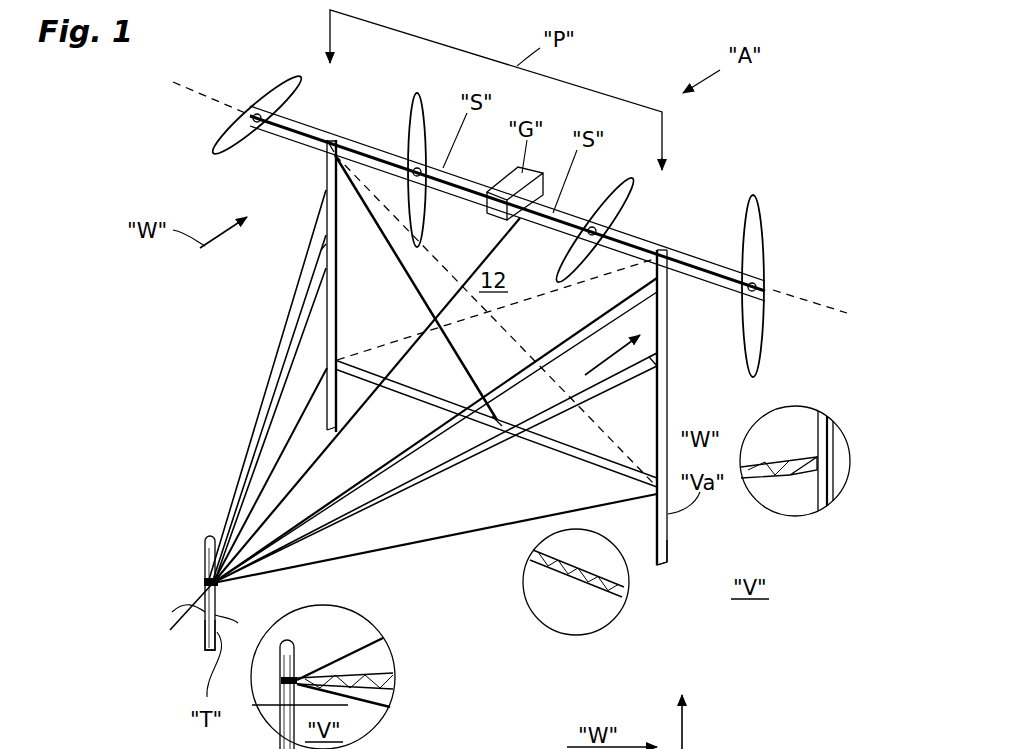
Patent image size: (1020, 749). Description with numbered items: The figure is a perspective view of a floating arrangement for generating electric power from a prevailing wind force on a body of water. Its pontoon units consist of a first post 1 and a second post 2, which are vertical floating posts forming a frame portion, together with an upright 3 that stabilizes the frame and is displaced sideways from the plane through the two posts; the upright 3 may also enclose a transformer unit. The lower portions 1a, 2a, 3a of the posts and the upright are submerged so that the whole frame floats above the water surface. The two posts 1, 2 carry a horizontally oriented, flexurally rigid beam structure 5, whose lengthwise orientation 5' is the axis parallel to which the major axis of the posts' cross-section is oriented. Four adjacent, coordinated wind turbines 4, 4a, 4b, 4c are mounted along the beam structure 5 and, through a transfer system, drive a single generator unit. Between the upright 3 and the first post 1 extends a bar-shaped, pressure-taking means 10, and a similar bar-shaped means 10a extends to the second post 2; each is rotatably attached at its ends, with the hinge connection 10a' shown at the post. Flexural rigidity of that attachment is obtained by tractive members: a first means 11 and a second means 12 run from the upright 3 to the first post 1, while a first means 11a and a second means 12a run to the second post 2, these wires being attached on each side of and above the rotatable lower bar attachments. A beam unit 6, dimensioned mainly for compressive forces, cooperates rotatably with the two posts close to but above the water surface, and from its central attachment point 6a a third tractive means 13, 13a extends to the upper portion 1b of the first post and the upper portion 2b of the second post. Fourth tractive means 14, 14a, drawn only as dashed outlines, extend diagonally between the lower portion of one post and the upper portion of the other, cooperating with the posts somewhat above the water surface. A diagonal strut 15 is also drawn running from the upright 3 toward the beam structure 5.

The first post 1 is at (333, 307).
The lower portion of the first post 1a is at (336, 409).
The upper portion of the first post 1b is at (338, 157).
The second post 2 is at (667, 315).
The lower portion of the second post 2a is at (664, 537).
The upper portion of the second post 2b is at (683, 260).
The upright 3 is at (205, 548).
The lower portion of the upright 3a is at (205, 640).
The wind turbine 4 is at (418, 115).
The wind turbine 4a is at (615, 192).
The wind turbine 4b is at (290, 80).
The wind turbine 4c is at (752, 232).
The beam structure 5 is at (507, 203).
The lengthwise orientation of the beam structure 5' is at (518, 168).
The beam unit 6 is at (548, 527).
The centrally oriented attachment point 6a is at (495, 426).
The bar-shaped means 10 is at (300, 338).
The bar-shaped means 10a is at (544, 521).
The hinge connection 10a' is at (735, 409).
The first means for taking up tractive force 11 is at (287, 357).
The first means for taking up tractive force 11a is at (410, 450).
The second means for taking up tractive force 12 is at (243, 467).
The second means for taking up tractive force 12a is at (455, 537).
The third means for taking up tractive force 13 is at (405, 270).
The third means for taking up tractive force 13a is at (575, 350).
The fourth means for taking up tractive force 14 is at (527, 348).
The fourth means for taking up tractive force 14a is at (543, 292).
The diagonal strut 15 is at (353, 420).